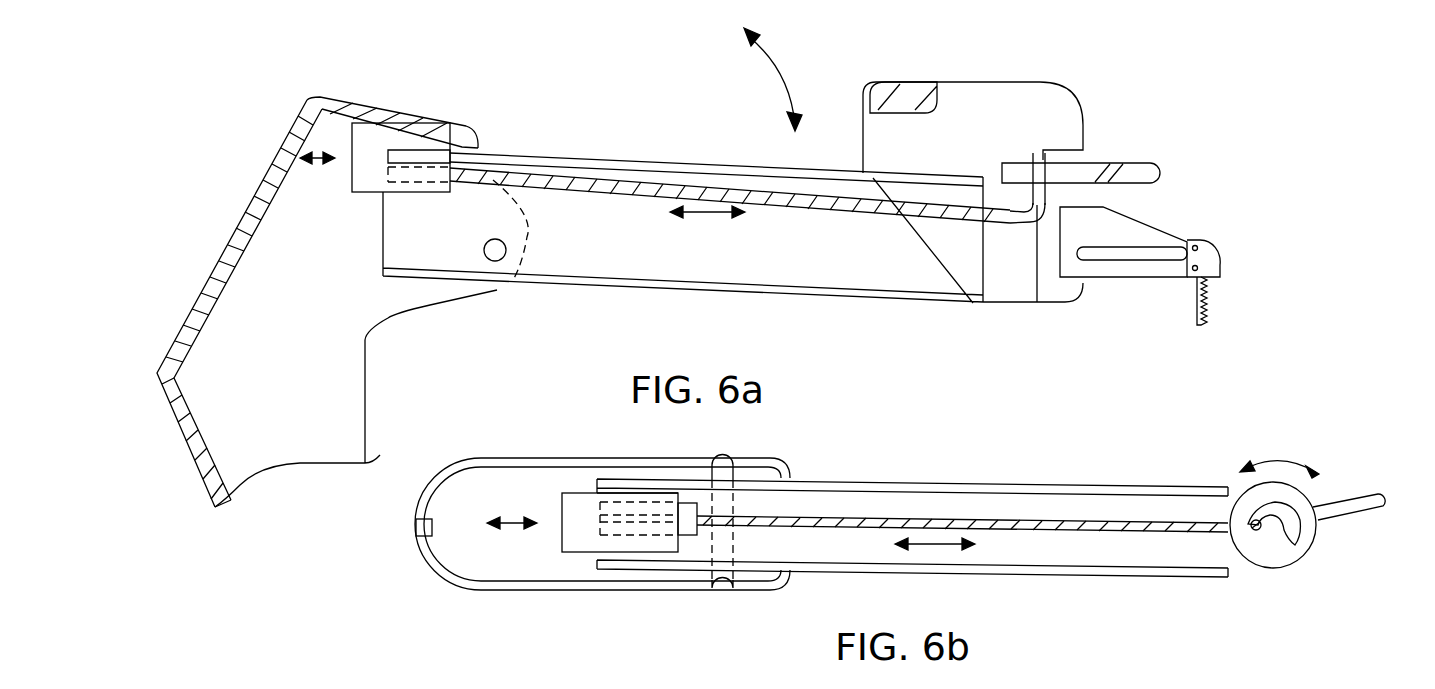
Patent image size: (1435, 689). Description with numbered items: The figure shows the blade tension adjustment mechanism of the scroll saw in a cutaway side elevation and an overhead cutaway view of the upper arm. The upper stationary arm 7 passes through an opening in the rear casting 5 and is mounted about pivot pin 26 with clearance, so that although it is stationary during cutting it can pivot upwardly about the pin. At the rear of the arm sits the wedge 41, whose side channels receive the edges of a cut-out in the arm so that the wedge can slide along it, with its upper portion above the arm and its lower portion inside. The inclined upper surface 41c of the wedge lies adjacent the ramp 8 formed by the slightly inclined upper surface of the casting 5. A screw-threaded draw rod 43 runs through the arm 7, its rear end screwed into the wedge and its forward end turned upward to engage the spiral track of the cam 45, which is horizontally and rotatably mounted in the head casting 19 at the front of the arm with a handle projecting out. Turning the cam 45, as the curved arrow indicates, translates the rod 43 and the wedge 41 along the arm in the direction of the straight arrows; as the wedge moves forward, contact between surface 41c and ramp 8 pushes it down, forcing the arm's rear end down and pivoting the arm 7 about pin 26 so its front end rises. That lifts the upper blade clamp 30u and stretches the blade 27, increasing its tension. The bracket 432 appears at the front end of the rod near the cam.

In FIG. 6A, the rear casting 5 is at (345, 367).
In FIG. 6B, the rear casting 5 is at (490, 583).
In FIG. 6A, the upper stationary arm 7 is at (855, 280).
In FIG. 6B, the upper stationary arm 7 is at (1020, 556).
In FIG. 6A, the ramp 8 is at (440, 125).
In FIG. 6A, the head casting 19 is at (1050, 105).
In FIG. 6A, the pivot pin 26 is at (497, 262).
In FIG. 6B, the pivot pin 26 is at (733, 595).
In FIG. 6A, the blade 27 is at (1208, 305).
In FIG. 6A, the upper blade clamp 30u is at (1222, 265).
In FIG. 6A, the wedge 41 is at (407, 140).
In FIG. 6B, the wedge 41 is at (585, 553).
In FIG. 6A, the upper surface 41c is at (403, 116).
In FIG. 6A, the draw rod 43 is at (583, 177).
In FIG. 6B, the draw rod 43 is at (885, 517).
In FIG. 6A, the cam 45 is at (1077, 168).
In FIG. 6B, the cam 45 is at (1318, 532).
In FIG. 6A, the bracket 432 is at (1085, 198).